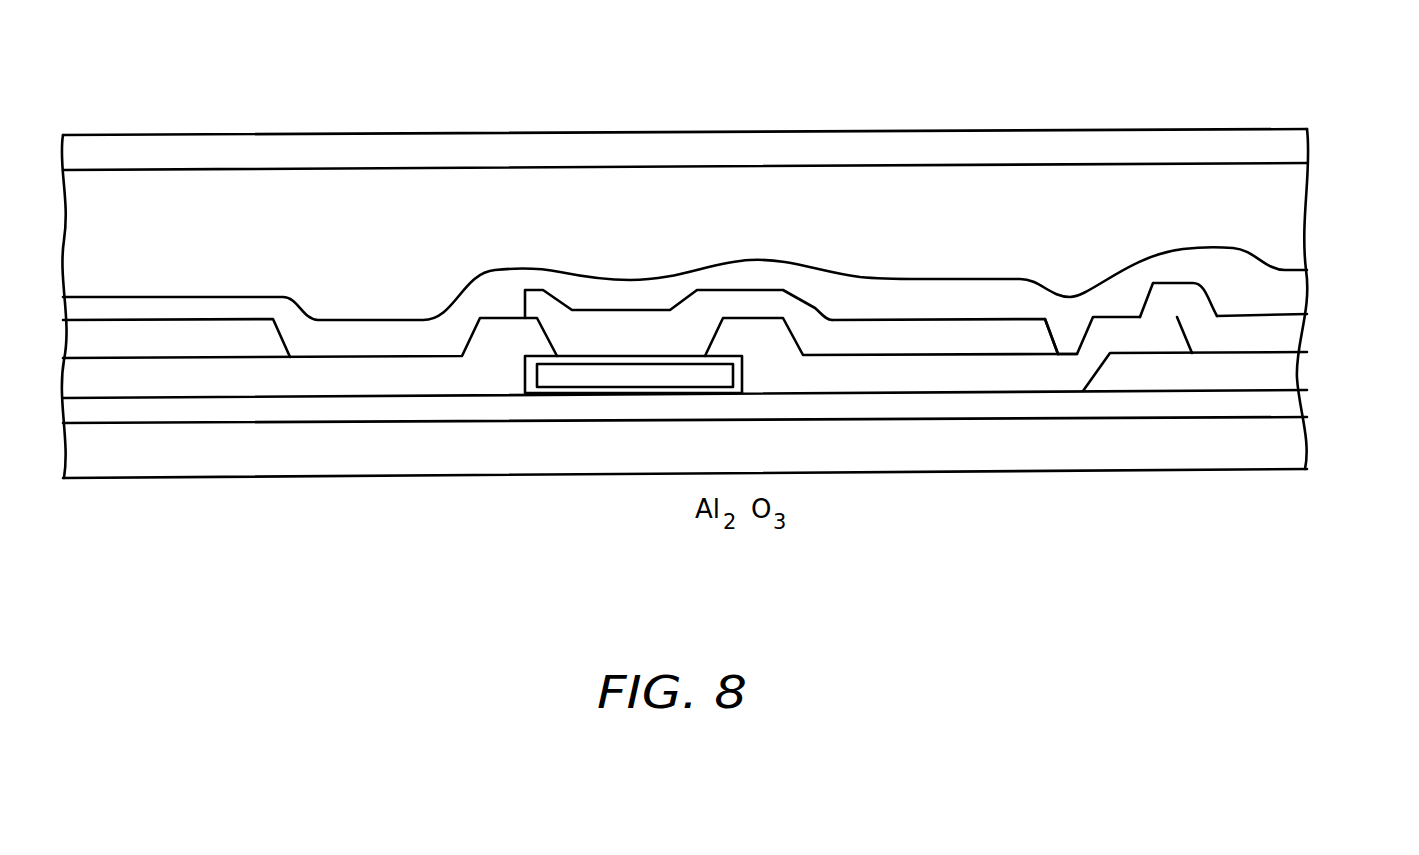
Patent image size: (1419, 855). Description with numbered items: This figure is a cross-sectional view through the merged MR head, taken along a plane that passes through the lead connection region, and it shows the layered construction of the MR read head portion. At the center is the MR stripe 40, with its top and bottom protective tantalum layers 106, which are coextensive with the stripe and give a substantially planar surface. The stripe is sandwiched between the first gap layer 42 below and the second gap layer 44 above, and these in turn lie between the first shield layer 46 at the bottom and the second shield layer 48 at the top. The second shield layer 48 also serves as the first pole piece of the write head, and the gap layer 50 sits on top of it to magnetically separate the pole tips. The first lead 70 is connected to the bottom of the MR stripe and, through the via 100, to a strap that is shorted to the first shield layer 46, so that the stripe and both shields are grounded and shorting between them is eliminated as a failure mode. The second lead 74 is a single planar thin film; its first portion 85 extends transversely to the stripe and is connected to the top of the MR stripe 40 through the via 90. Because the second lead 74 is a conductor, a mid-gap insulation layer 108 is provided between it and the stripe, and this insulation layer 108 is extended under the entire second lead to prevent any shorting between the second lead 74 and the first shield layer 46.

The gap layer 50 is at (1275, 150).
The second shield layer 48 is at (1250, 202).
The second gap layer 44 is at (1288, 292).
The via 100 is at (1173, 305).
The second lead 74 is at (184, 292).
The via 90 is at (630, 333).
The mid-gap insulation layer 108 is at (333, 378).
The MR stripe 40 is at (663, 380).
The protective tantalum layers 106 is at (538, 366).
The first portion of the second lead 85 is at (1030, 343).
The first lead 70 is at (1103, 383).
The first gap layer 42 is at (1277, 403).
The first shield layer 46 is at (1273, 438).